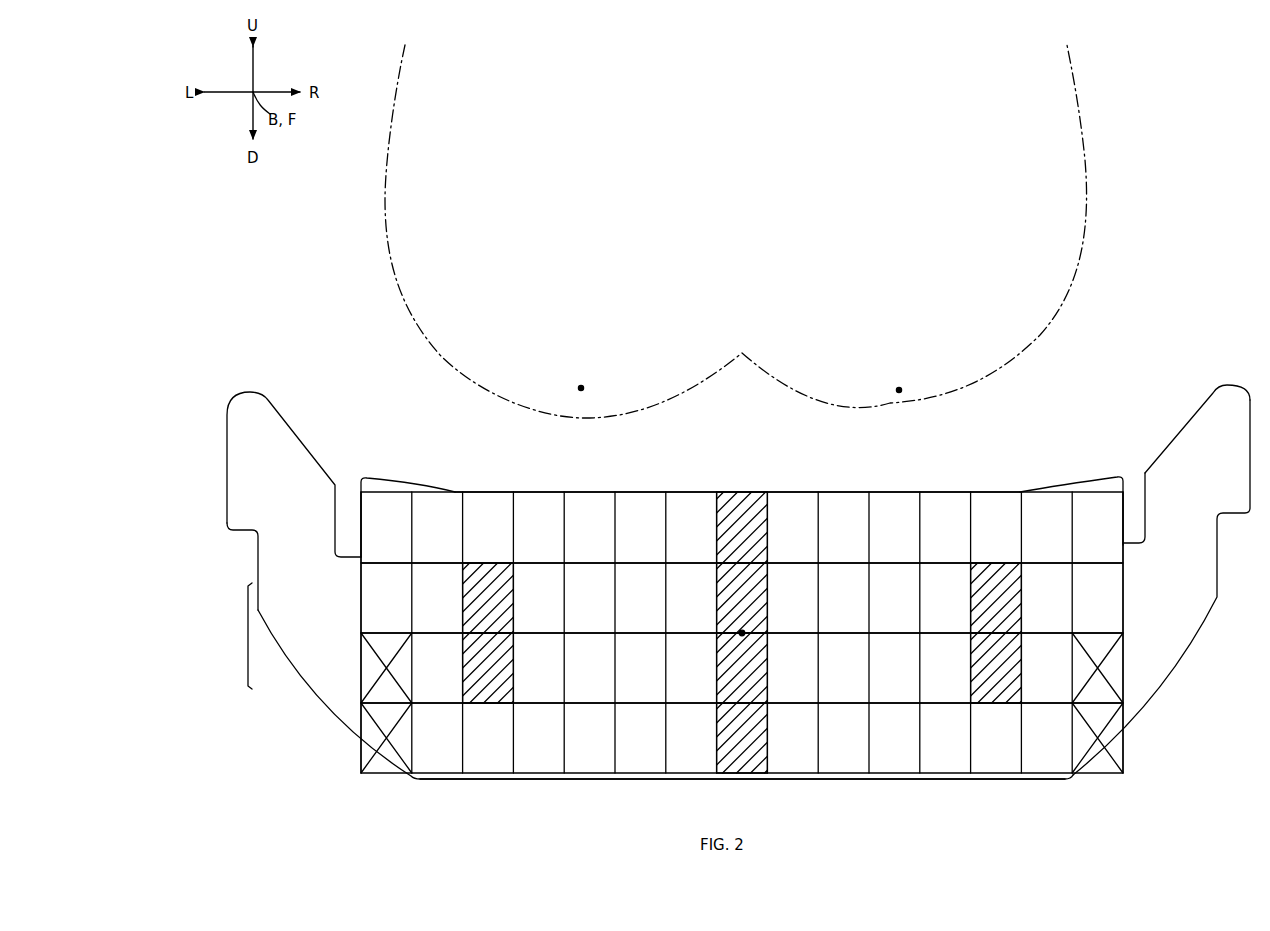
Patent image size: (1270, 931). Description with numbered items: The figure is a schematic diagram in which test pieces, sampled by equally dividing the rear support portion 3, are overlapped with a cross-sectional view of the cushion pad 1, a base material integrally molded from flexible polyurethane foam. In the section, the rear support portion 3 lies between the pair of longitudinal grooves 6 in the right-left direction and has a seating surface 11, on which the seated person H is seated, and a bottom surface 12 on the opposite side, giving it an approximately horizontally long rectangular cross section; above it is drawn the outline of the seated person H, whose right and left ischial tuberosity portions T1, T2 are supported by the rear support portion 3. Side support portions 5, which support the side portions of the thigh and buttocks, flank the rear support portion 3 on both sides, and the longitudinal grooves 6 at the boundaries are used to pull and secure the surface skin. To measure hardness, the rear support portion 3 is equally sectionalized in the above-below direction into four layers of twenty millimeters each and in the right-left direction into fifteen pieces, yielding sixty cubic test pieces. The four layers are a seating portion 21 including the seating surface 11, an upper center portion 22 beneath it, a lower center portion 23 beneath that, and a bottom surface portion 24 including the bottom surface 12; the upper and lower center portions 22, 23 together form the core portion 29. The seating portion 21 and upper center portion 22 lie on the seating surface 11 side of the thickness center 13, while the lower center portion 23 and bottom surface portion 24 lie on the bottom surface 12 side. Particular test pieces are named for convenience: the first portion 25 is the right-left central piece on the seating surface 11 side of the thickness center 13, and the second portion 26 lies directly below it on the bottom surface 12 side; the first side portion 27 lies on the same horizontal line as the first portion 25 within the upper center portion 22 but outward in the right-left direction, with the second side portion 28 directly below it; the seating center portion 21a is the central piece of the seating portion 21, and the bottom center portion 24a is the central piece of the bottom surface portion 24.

The cushion pad 1 is at (1158, 215).
The rear support portion 3 is at (1102, 441).
The side support portion 5 is at (270, 428).
The longitudinal groove 6 is at (1133, 537).
The seating surface 11 is at (997, 489).
The bottom surface 12 is at (891, 780).
The thickness center 13 is at (745, 632).
The seating portion 21 is at (346, 528).
The seating center portion 21a is at (737, 491).
The upper center portion 22 is at (343, 592).
The lower center portion 23 is at (343, 673).
The bottom surface portion 24 is at (346, 742).
The bottom center portion 24a is at (734, 774).
The first portion 25 is at (717, 599).
The second portion 26 is at (717, 665).
The first side portion 27 is at (513, 596).
The second side portion 28 is at (513, 661).
The core portion 29 is at (225, 636).
The seated person H is at (388, 230).
The right ischial tuberosity portion T1 is at (582, 385).
The left ischial tuberosity portion T2 is at (900, 387).